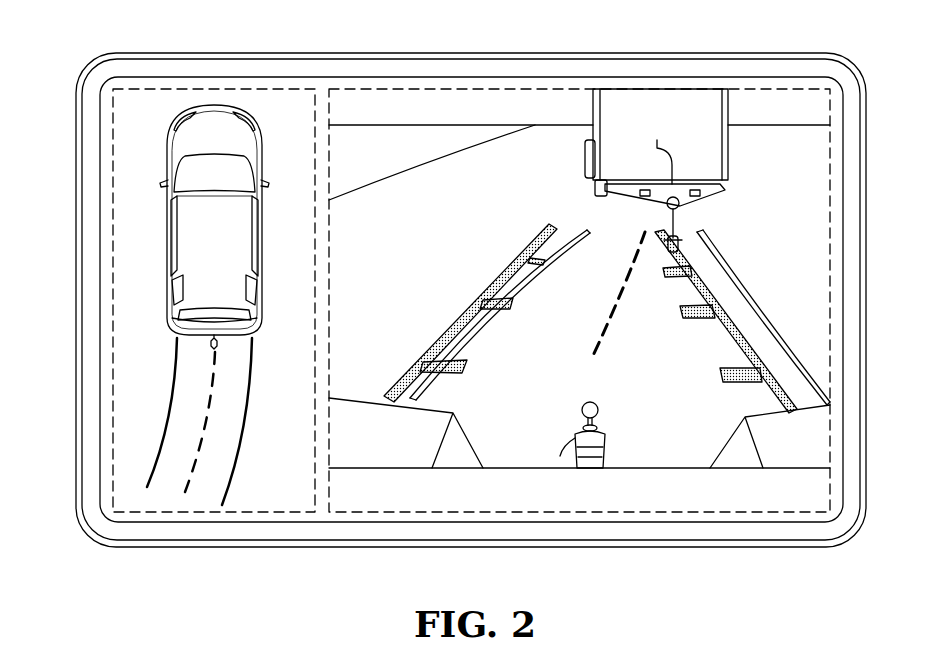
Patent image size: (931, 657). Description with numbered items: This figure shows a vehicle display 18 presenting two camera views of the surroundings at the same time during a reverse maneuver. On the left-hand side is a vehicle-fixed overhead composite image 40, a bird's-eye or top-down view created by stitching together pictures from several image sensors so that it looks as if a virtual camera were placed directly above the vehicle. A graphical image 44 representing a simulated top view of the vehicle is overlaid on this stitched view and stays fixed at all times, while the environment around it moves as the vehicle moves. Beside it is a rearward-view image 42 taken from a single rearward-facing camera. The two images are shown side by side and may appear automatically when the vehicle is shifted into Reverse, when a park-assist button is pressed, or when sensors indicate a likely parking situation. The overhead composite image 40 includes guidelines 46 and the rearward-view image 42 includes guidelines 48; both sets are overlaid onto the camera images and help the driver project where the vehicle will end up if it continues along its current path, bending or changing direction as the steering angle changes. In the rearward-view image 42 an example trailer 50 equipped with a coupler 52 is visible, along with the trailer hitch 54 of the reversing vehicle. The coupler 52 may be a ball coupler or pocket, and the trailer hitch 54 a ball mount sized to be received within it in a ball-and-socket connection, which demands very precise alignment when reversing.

The vehicle display 18 is at (773, 53).
The vehicle-fixed overhead composite image 40 is at (167, 88).
The rearward-view image 42 is at (497, 88).
The graphical image 44 is at (215, 118).
The guidelines 46 is at (173, 415).
The guidelines 48 is at (728, 293).
The trailer 50 is at (665, 112).
The coupler 52 is at (693, 210).
The trailer hitch 54 is at (597, 417).